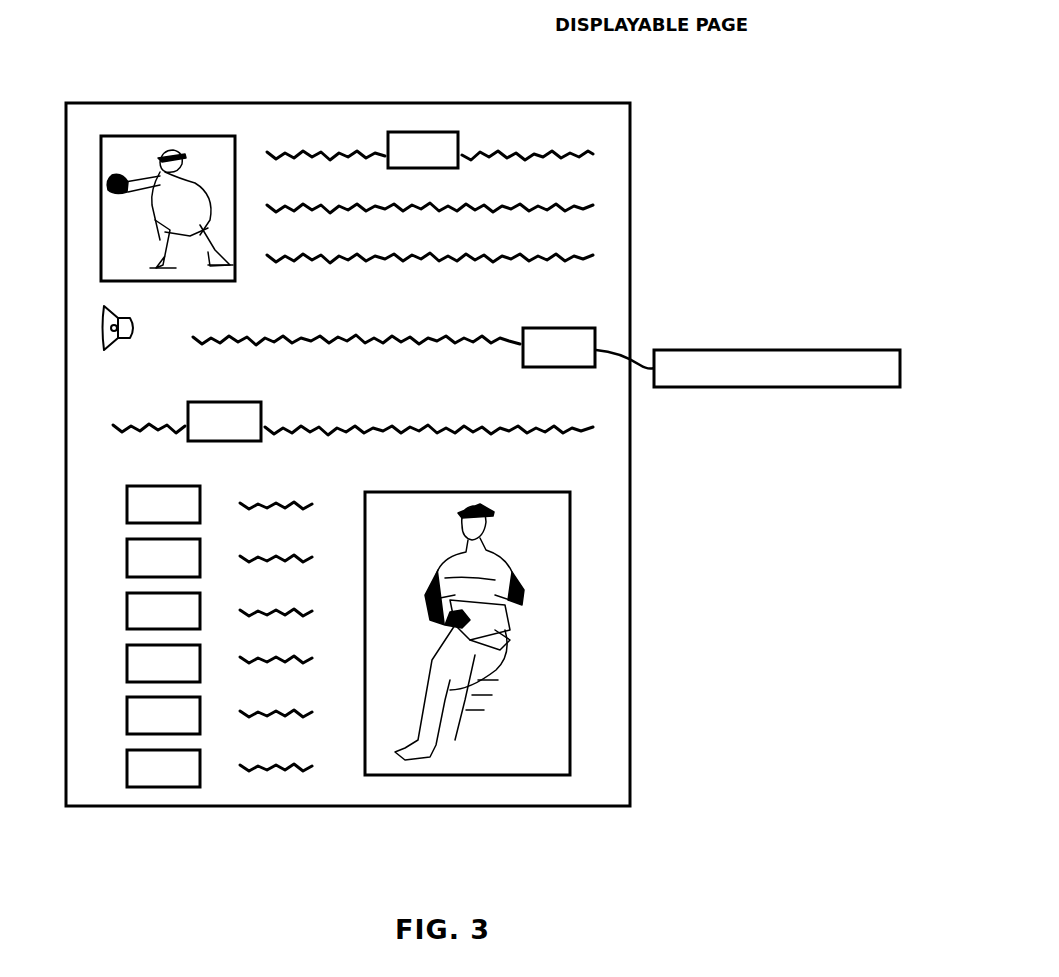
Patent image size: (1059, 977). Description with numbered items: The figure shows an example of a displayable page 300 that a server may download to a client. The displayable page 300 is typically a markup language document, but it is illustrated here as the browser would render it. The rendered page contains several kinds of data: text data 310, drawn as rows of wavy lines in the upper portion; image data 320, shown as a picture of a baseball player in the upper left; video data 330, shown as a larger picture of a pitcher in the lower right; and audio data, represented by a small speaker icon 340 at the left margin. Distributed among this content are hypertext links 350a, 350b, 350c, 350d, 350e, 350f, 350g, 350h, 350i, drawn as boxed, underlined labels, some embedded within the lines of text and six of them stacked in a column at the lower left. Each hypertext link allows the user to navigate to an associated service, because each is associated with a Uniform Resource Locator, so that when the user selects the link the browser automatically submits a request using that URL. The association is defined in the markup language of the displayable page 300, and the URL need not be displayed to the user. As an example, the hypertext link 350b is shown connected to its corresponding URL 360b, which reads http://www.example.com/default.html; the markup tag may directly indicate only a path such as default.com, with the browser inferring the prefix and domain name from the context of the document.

The displayable page 300 is at (562, 92).
The text data 310 is at (583, 208).
The image data 320 is at (163, 137).
The video data 330 is at (462, 776).
The audio data icon 340 is at (104, 322).
The hypertext link 350a is at (423, 150).
The hypertext link 350b is at (394, 347).
The hypertext link 350c is at (353, 421).
The hypertext link 350d is at (219, 504).
The hypertext link 350e is at (219, 558).
The hypertext link 350f is at (219, 611).
The hypertext link 350g is at (219, 663).
The hypertext link 350h is at (219, 715).
The hypertext link 350i is at (219, 768).
The URL 360b is at (742, 350).